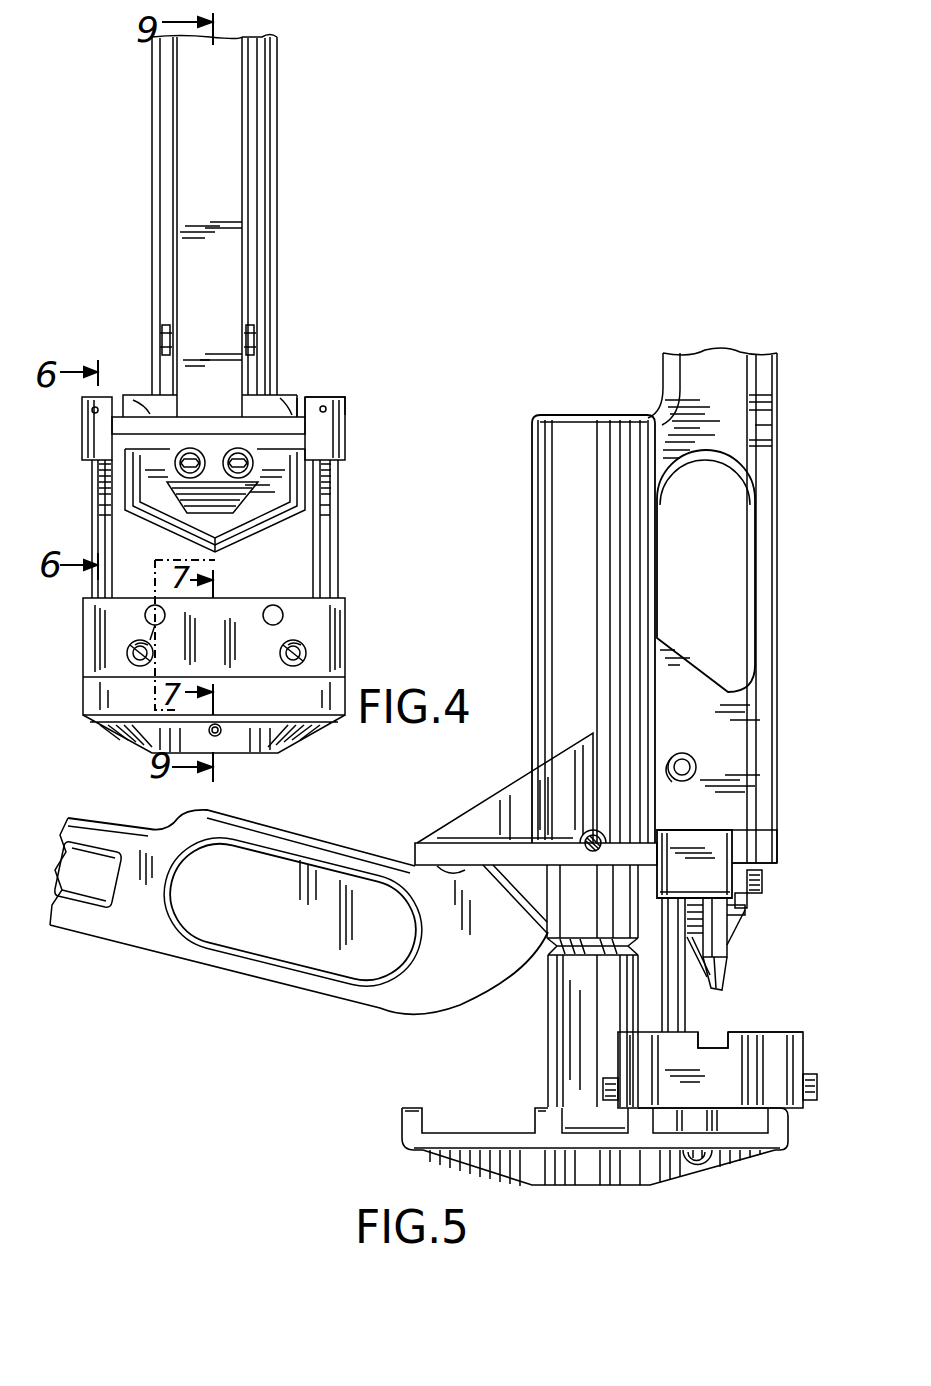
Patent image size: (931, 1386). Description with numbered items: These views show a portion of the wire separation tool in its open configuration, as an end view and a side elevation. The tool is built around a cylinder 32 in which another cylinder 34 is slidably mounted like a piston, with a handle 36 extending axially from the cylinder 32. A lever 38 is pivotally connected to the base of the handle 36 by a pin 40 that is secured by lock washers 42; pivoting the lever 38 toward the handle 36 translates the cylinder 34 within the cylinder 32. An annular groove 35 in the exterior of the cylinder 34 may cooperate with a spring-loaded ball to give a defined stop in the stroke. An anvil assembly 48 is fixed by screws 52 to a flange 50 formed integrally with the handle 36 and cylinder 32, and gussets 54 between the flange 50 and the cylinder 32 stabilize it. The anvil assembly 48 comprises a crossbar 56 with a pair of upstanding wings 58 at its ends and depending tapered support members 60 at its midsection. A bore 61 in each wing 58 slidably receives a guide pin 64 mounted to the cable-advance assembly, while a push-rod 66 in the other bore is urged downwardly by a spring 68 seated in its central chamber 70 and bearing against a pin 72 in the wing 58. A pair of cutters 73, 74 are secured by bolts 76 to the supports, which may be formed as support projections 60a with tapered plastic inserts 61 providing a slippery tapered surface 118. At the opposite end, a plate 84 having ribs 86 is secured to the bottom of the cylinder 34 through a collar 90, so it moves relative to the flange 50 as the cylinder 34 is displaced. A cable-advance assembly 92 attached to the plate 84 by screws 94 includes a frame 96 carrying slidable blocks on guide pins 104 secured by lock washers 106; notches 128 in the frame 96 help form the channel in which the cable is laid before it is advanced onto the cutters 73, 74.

In FIG. 4, the cylinder 32 is at (219, 227).
In FIG. 5, the cylinder 32 is at (532, 566).
In FIG. 5, the cylinder (piston) 34 is at (547, 1030).
In FIG. 5, the annular groove 35 is at (557, 948).
In FIG. 4, the handle 36 is at (252, 190).
In FIG. 5, the handle 36 is at (778, 572).
In FIG. 5, the lever 38 is at (85, 942).
In FIG. 5, the pin 40 is at (672, 760).
In FIG. 5, the lock washers 42 is at (697, 759).
In FIG. 4, the anvil assembly 48 is at (352, 448).
In FIG. 5, the anvil assembly 48 is at (740, 831).
In FIG. 5, the flange 50 is at (415, 850).
In FIG. 4, the screws 52 is at (287, 396).
In FIG. 5, the gussets 54 is at (500, 803).
In FIG. 4, the crossbar 56 is at (308, 397).
In FIG. 4, the wings 58 is at (346, 416).
In FIG. 5, the wings 58 is at (735, 845).
In FIG. 4, the depending legs (tapered support members) 60 is at (253, 492).
In FIG. 5, the support projections 60a is at (746, 906).
In FIG. 5, the bore / tapered plastic insert 61 is at (745, 915).
In FIG. 4, the guide pin 64 is at (339, 576).
In FIG. 5, the guide pin 64 is at (687, 1016).
In FIG. 5, the push-rod 66 is at (728, 958).
In FIG. 4, the spring 68 is at (96, 473).
In FIG. 4, the central chamber 70 is at (96, 496).
In FIG. 4, the pin 72 is at (328, 400).
In FIG. 4, the cutter 73 is at (310, 520).
In FIG. 5, the cutter 73 is at (721, 980).
In FIG. 5, the cutter 74 is at (707, 980).
In FIG. 4, the bolts 76 is at (230, 452).
In FIG. 5, the bolts 76 is at (763, 883).
In FIG. 5, the plate 84 is at (471, 1134).
In FIG. 5, the ribs 86 is at (423, 1108).
In FIG. 5, the collar 90 is at (595, 1122).
In FIG. 5, the cable-advance assembly 92 is at (810, 1052).
In FIG. 5, the screws 94 is at (707, 1160).
In FIG. 5, the frame 96 is at (787, 1032).
In FIG. 4, the guide pins 104 is at (284, 656).
In FIG. 4, the lock washers 106 is at (282, 641).
In FIG. 5, the tapered surface 118 is at (737, 932).
In FIG. 5, the notches 128 is at (712, 1050).